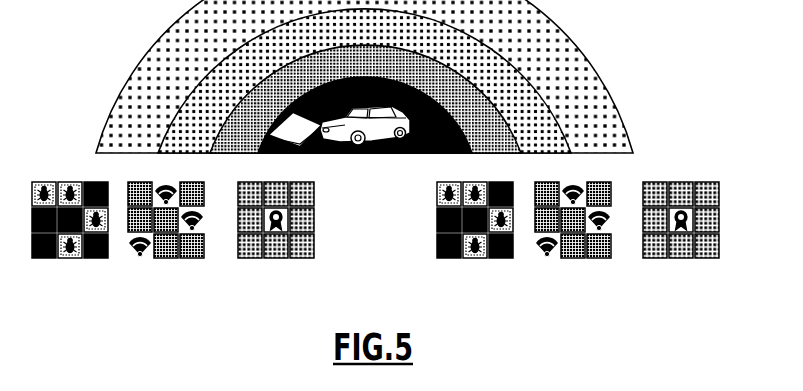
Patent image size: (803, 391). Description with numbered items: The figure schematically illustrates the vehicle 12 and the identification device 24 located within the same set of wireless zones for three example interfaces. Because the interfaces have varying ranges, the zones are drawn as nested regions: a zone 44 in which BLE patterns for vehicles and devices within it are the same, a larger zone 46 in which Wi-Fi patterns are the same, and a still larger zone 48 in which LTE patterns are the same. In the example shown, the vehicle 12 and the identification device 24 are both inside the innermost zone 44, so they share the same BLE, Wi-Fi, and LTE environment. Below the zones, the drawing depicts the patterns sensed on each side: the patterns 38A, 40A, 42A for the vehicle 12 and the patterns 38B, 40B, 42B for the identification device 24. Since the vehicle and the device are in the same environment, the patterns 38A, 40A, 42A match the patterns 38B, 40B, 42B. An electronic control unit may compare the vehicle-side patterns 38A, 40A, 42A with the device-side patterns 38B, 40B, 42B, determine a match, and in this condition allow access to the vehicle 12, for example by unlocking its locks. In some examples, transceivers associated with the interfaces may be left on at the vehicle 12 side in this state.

The vehicle 12 is at (381, 122).
The identification device 24 is at (283, 116).
The zone 44 is at (454, 104).
The zone 46 is at (564, 98).
The zone 48 is at (636, 121).
The pattern 38A is at (75, 277).
The pattern 40A is at (170, 277).
The pattern 42A is at (280, 277).
The pattern 38B is at (482, 277).
The pattern 40B is at (577, 277).
The pattern 42B is at (687, 277).